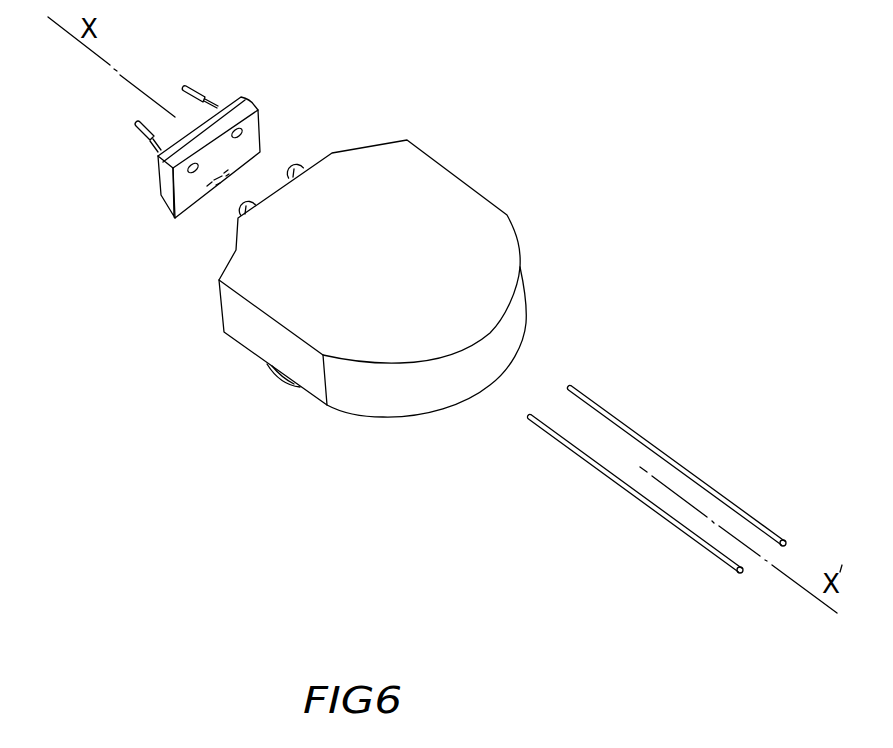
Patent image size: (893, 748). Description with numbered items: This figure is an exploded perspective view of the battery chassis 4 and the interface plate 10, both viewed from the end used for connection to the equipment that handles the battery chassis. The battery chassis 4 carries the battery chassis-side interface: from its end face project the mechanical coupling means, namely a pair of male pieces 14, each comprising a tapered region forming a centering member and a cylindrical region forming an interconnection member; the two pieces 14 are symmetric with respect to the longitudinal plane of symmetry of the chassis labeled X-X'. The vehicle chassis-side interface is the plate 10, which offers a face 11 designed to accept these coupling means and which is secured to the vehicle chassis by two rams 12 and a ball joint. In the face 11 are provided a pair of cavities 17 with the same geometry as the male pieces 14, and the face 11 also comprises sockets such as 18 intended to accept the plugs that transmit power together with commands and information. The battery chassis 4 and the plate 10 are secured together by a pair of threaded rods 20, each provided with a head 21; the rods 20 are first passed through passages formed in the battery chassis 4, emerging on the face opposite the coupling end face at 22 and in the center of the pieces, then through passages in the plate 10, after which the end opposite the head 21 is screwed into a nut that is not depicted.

The battery chassis 4 is at (458, 200).
The interface plate 10 is at (259, 89).
The face 11 is at (248, 147).
The rams 12 is at (190, 84).
The male pieces 14 is at (313, 152).
The cavities 17 is at (265, 113).
The sockets 18 is at (176, 221).
The threaded rods 20 is at (595, 462).
The head 21 is at (787, 543).
The rod passage outlet 22 is at (505, 328).